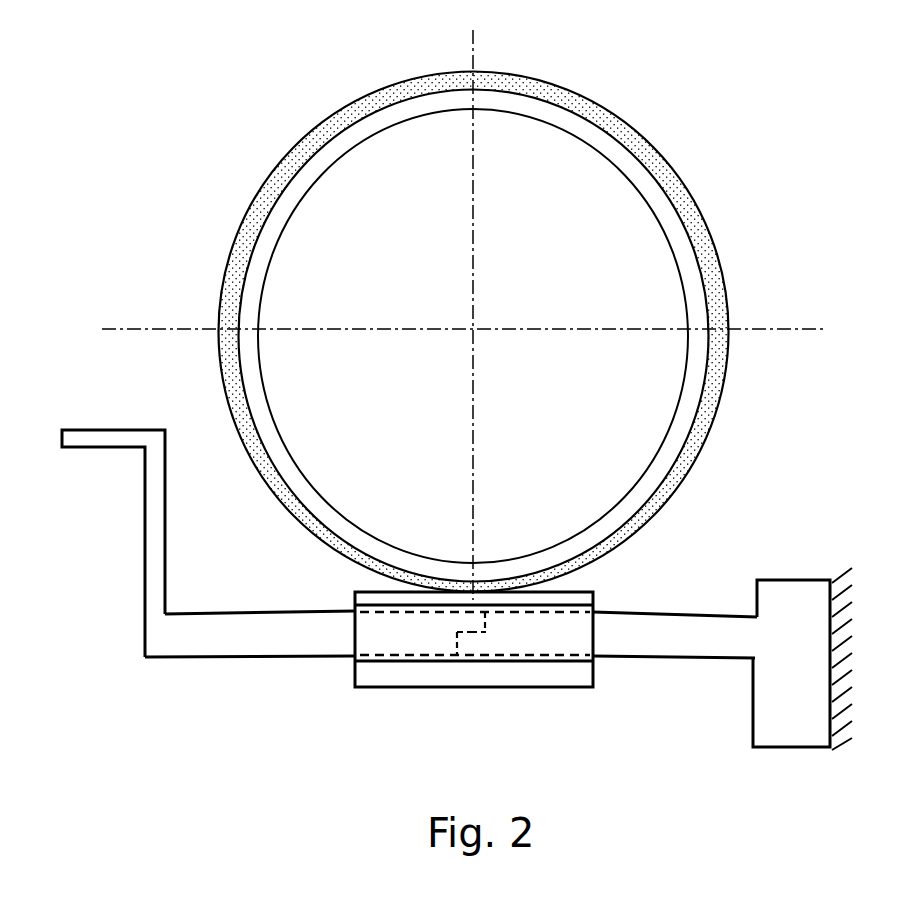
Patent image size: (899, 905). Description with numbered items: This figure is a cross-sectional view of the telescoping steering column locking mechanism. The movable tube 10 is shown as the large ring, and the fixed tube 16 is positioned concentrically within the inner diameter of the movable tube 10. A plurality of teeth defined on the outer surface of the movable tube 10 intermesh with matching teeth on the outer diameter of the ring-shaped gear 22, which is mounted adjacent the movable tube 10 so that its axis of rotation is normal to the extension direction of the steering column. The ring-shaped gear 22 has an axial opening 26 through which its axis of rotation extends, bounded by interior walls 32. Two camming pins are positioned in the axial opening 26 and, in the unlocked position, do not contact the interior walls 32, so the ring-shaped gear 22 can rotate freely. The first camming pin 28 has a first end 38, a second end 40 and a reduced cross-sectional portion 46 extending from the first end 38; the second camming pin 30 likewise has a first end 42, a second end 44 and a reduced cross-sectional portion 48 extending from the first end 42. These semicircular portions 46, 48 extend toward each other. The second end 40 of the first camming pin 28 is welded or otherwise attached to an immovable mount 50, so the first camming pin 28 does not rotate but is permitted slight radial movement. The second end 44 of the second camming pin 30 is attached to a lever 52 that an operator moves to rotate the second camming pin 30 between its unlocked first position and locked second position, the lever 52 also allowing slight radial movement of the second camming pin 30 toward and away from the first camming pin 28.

The movable tube 10 is at (678, 192).
The fixed tube 16 is at (602, 145).
The ring-shaped gear 22 is at (387, 675).
The axial opening 26 is at (420, 657).
The first camming pin 28 is at (540, 638).
The second camming pin 30 is at (385, 635).
The interior walls 32 is at (590, 667).
The first end of first camming pin 38 is at (490, 625).
The second end of first camming pin 40 is at (595, 628).
The first end of second camming pin 42 is at (455, 645).
The second end of second camming pin 44 is at (353, 630).
The reduced cross-sectional portion of first camming pin 46 is at (472, 643).
The reduced cross-sectional portion of second camming pin 48 is at (468, 623).
The mount 50 is at (803, 605).
The lever 52 is at (77, 437).